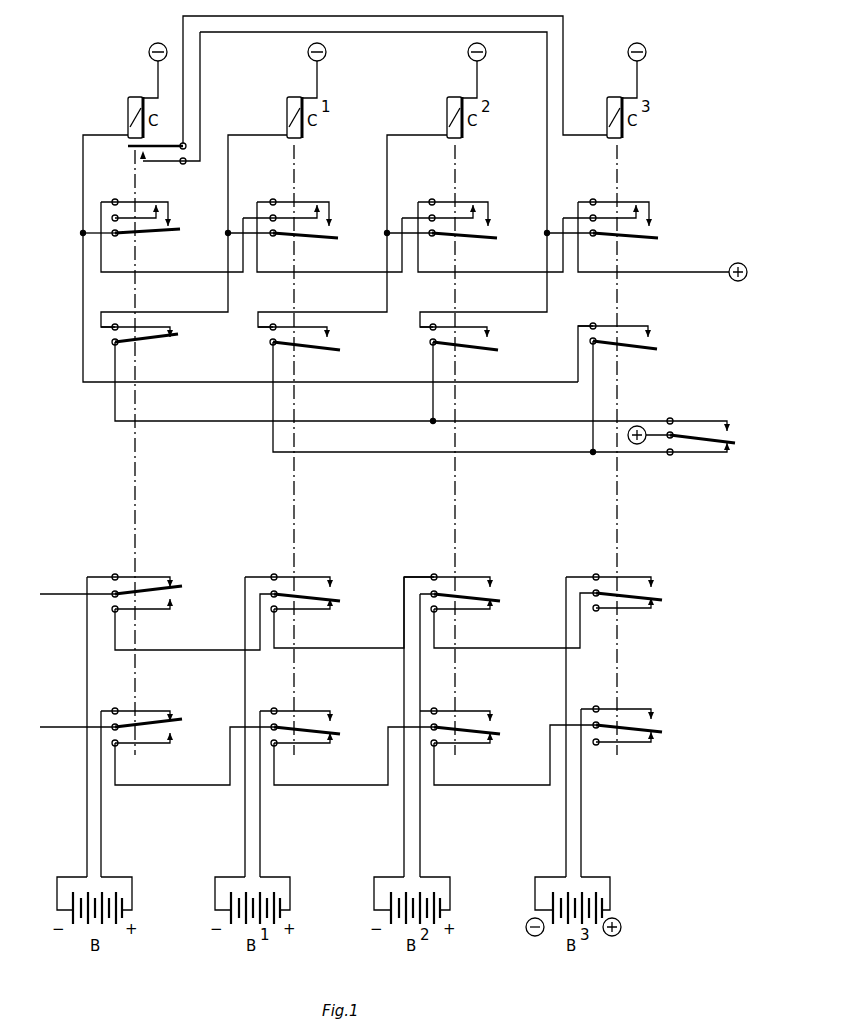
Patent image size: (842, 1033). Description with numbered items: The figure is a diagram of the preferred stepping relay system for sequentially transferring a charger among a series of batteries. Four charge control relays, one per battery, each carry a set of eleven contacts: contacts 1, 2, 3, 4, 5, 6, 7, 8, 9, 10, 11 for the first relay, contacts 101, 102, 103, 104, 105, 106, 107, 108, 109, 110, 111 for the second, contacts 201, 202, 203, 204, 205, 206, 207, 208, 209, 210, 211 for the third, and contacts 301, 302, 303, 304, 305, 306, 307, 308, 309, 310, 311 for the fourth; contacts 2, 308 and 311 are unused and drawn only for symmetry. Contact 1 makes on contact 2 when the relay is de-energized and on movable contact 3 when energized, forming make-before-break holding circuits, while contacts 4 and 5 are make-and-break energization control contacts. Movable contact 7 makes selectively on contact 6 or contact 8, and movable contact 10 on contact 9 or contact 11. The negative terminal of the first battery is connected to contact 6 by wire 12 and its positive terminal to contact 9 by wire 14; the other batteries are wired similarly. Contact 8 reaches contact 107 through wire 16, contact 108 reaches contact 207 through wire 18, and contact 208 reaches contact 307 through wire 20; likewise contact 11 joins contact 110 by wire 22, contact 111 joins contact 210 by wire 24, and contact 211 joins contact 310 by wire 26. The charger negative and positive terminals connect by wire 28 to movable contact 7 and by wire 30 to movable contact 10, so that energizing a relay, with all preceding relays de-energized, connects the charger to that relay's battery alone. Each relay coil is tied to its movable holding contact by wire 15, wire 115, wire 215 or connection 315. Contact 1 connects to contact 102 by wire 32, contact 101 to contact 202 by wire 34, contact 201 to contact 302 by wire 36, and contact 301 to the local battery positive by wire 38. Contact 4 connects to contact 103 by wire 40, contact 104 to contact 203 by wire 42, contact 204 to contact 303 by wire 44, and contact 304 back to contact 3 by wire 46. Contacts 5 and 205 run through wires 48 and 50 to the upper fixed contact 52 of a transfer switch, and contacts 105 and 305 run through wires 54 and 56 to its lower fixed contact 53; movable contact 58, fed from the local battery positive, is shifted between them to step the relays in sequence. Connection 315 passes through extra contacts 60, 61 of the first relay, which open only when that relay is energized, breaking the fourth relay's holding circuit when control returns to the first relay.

The contact 1 is at (170, 203).
The contact 2 is at (178, 220).
The movable contact 3 is at (182, 236).
The contact 4 is at (172, 326).
The movable contact 5 is at (166, 344).
The contact 6 is at (172, 577).
The movable contact 7 is at (184, 590).
The contact 8 is at (180, 610).
The contact 9 is at (172, 711).
The movable contact 10 is at (184, 724).
The contact 11 is at (180, 744).
The wire 12 is at (87, 640).
The wire 14 is at (101, 706).
The wire 15 is at (83, 162).
The wire 16 is at (205, 640).
The wire 18 is at (365, 640).
The wire 20 is at (525, 640).
The wire 22 is at (175, 775).
The wire 24 is at (335, 775).
The wire 26 is at (495, 775).
The wire 28 is at (68, 602).
The wire 30 is at (68, 733).
The wire 32 is at (181, 272).
The wire 34 is at (345, 272).
The wire 36 is at (506, 272).
The wire 38 is at (666, 272).
The wire 40 is at (199, 312).
The wire 42 is at (355, 312).
The wire 44 is at (517, 312).
The wire 46 is at (592, 312).
The wire 48 is at (180, 413).
The wire 50 is at (433, 418).
The upper fixed contact 52 is at (705, 420).
The lower fixed contact 53 is at (717, 462).
The wire 54 is at (273, 416).
The wire 56 is at (593, 414).
The movable contact 58 is at (737, 436).
The extra contact 60 is at (162, 146).
The extra contact 61 is at (157, 163).
The contact 101 is at (330, 205).
The contact 102 is at (332, 220).
The movable contact 103 is at (339, 240).
The contact 104 is at (331, 325).
The movable contact 105 is at (331, 350).
The contact 106 is at (335, 577).
The movable contact 107 is at (342, 596).
The contact 108 is at (340, 610).
The contact 109 is at (335, 711).
The movable contact 110 is at (342, 729).
The contact 111 is at (340, 744).
The wire 115 is at (232, 163).
The contact 201 is at (490, 205).
The contact 202 is at (492, 220).
The movable contact 203 is at (498, 240).
The contact 204 is at (490, 325).
The movable contact 205 is at (490, 350).
The contact 206 is at (493, 577).
The movable contact 207 is at (502, 596).
The contact 208 is at (500, 610).
The contact 209 is at (493, 711).
The movable contact 210 is at (502, 729).
The contact 211 is at (500, 744).
The wire 215 is at (387, 162).
The contact 301 is at (651, 205).
The contact 302 is at (655, 220).
The movable contact 303 is at (660, 240).
The contact 304 is at (651, 323).
The movable contact 305 is at (661, 352).
The contact 306 is at (655, 577).
The movable contact 307 is at (664, 595).
The contact 308 is at (663, 609).
The contact 309 is at (655, 709).
The movable contact 310 is at (664, 727).
The contact 311 is at (663, 743).
The connection 315 is at (574, 138).